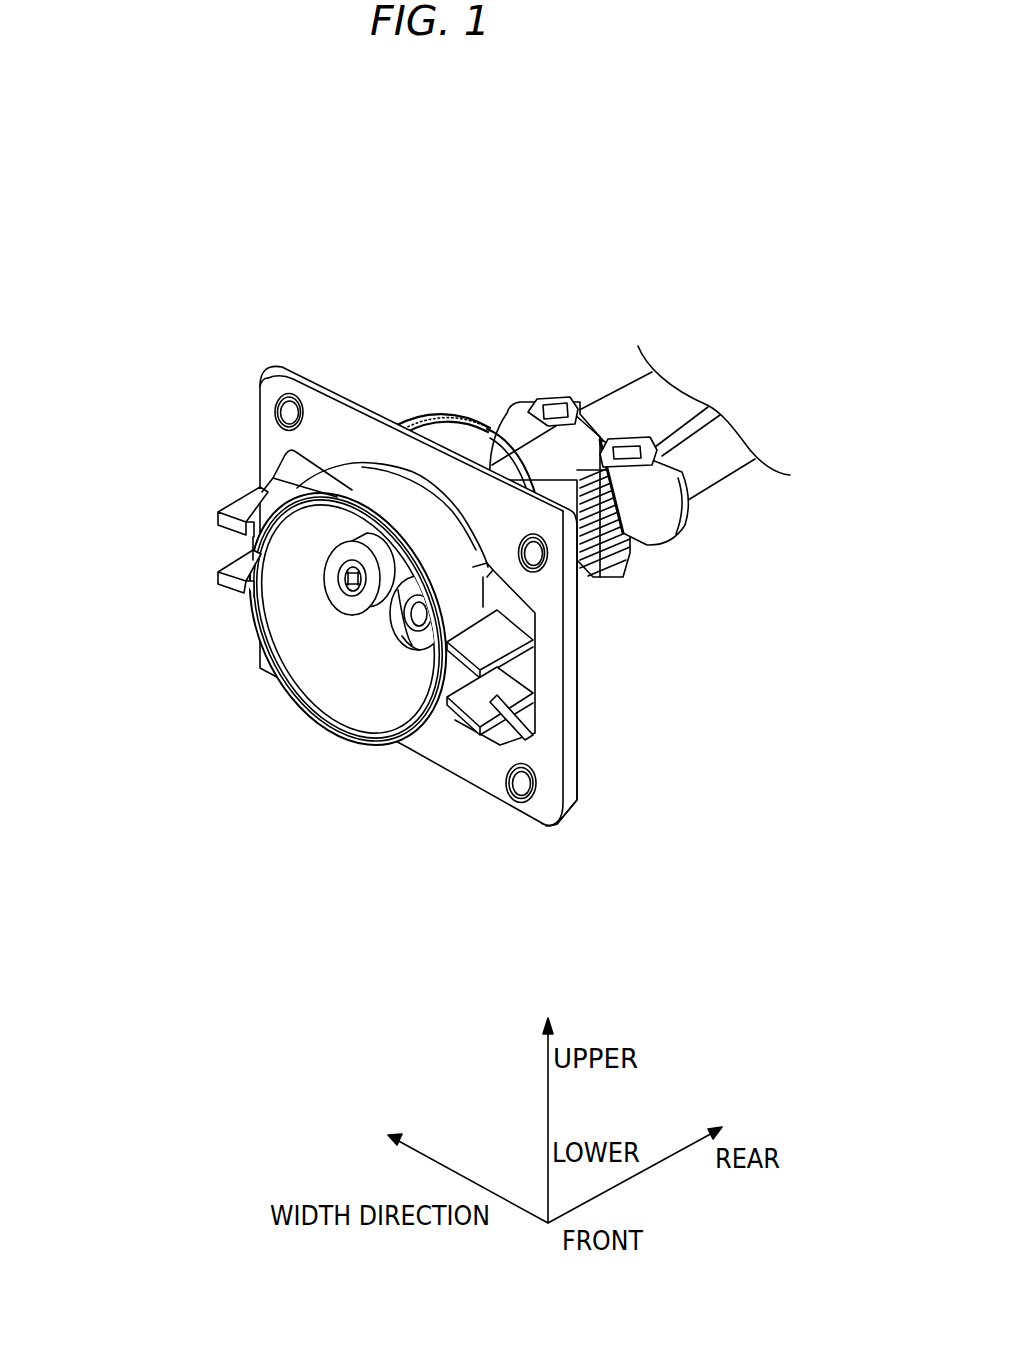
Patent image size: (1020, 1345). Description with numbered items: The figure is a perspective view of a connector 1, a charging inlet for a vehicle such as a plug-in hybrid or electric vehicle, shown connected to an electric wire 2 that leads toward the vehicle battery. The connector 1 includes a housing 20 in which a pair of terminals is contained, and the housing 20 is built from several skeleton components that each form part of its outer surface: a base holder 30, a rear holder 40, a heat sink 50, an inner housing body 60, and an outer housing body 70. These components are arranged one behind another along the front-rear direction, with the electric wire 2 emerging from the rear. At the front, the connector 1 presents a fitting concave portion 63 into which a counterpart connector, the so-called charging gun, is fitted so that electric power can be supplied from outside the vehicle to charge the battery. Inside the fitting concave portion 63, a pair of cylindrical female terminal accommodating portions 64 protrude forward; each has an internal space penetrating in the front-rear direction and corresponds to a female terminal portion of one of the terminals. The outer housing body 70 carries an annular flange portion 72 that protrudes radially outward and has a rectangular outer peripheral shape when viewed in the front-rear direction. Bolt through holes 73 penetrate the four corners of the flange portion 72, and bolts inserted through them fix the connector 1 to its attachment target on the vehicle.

The connector 1 is at (185, 387).
The electric wire 2 is at (609, 391).
The housing 20 is at (522, 131).
The base holder 30 is at (512, 403).
The rear holder 40 is at (550, 392).
The heat sink 50 is at (486, 423).
The inner housing body 60 is at (400, 413).
The fitting concave portion 63 is at (335, 695).
The female terminal accommodating portion 64 is at (397, 613).
The outer housing body 70 is at (461, 583).
The flange portion 72 is at (572, 773).
The bolt through hole 73 is at (517, 797).